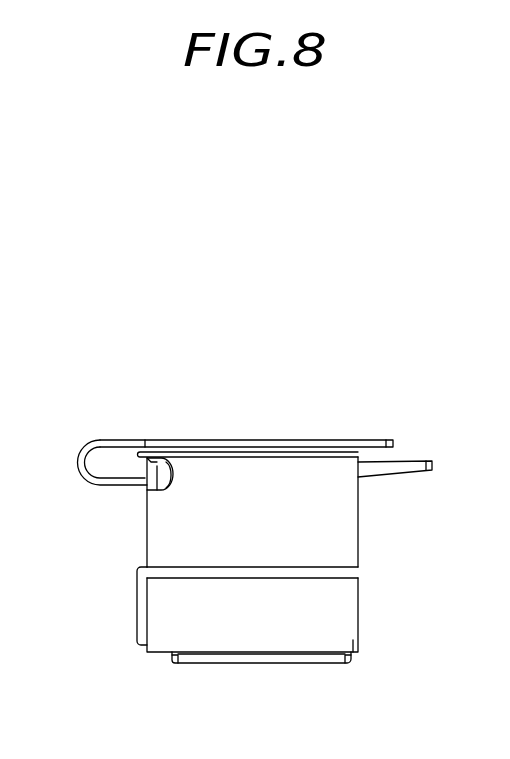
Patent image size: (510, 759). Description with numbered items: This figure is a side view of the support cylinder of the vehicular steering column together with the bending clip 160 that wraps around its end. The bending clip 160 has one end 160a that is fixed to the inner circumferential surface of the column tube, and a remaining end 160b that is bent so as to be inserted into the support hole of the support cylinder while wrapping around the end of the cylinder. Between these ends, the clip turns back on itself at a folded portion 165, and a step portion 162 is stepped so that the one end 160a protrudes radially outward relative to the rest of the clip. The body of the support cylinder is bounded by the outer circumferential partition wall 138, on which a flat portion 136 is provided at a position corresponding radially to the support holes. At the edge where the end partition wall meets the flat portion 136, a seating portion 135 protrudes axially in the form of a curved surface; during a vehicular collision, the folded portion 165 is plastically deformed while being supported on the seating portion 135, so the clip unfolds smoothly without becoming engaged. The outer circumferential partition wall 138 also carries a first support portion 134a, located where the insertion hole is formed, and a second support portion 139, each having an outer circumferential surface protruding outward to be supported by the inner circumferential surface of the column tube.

The bending clip 160 is at (243, 419).
The one end of bending clip 160a is at (375, 448).
The remaining end of bending clip 160b is at (417, 465).
The step portion 162 is at (140, 444).
The folded portion 165 is at (88, 458).
The second support portion 139 is at (152, 484).
The outer circumferential partition wall 138 is at (343, 518).
The flat portion 136 is at (343, 605).
The seating portion 135 is at (137, 603).
The first support portion 134a is at (247, 658).